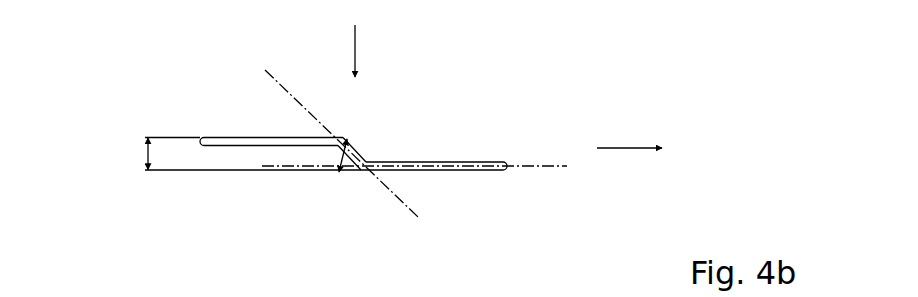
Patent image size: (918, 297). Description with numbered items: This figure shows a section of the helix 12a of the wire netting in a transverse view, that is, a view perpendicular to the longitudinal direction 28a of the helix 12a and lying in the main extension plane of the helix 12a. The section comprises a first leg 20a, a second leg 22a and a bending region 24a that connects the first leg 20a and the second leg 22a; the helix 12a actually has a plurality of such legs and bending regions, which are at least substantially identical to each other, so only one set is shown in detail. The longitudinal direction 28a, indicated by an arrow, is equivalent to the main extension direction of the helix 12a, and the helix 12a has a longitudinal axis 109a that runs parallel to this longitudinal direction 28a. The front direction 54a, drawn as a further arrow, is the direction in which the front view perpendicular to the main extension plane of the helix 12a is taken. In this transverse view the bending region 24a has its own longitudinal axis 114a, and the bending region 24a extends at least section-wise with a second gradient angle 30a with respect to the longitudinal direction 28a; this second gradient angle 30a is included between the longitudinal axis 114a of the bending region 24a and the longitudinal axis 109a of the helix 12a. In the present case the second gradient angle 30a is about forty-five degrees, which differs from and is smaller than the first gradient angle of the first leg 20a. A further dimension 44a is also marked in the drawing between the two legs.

The helix 12a is at (359, 102).
The first leg 20a is at (235, 138).
The second leg 22a is at (447, 129).
The bending region 24a is at (364, 161).
The longitudinal direction 28a is at (632, 149).
The second gradient angle 30a is at (337, 157).
The thickness / distance 44a is at (147, 155).
The front direction 54a is at (355, 47).
The longitudinal axis 109a is at (540, 165).
The longitudinal axis 114a is at (397, 190).